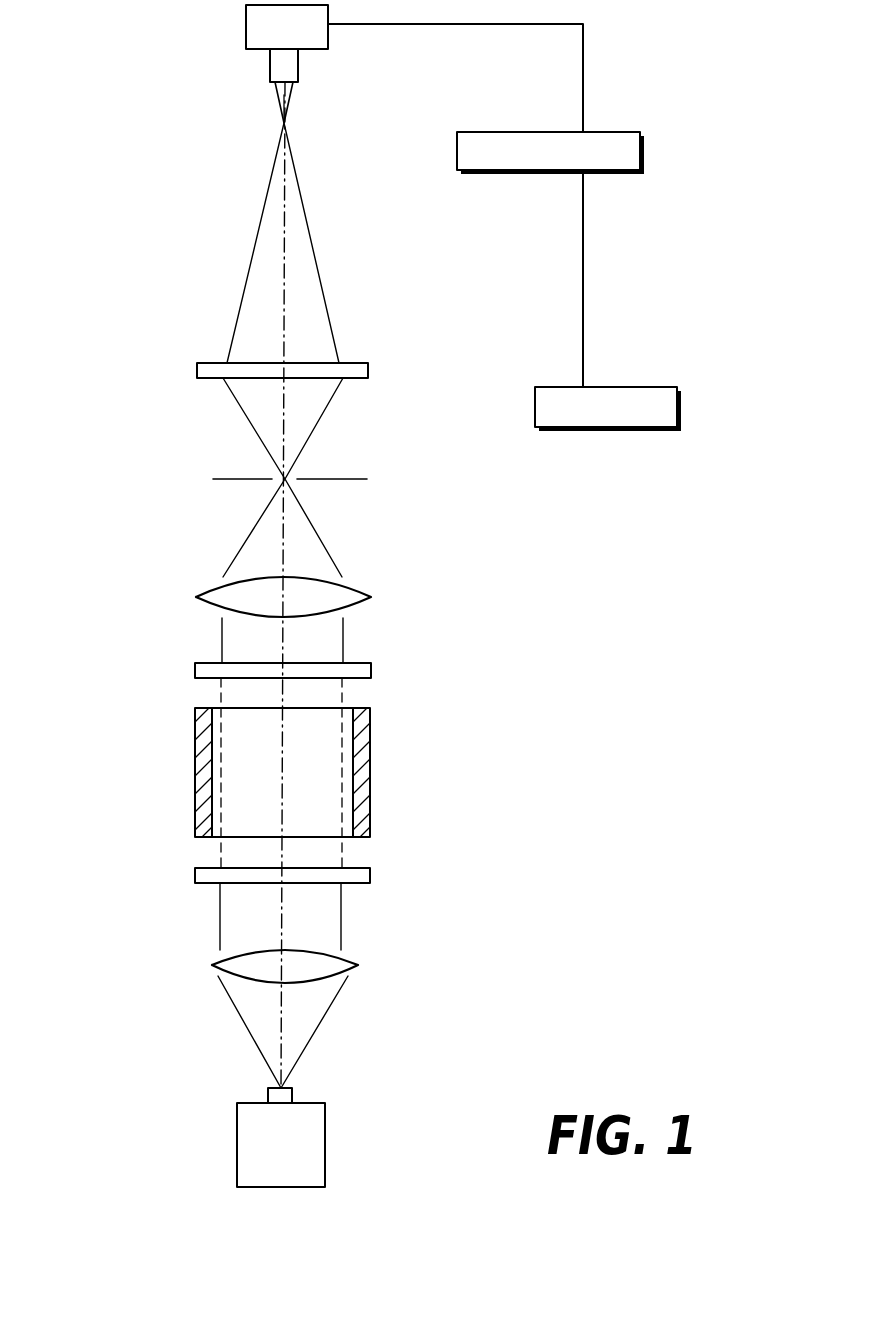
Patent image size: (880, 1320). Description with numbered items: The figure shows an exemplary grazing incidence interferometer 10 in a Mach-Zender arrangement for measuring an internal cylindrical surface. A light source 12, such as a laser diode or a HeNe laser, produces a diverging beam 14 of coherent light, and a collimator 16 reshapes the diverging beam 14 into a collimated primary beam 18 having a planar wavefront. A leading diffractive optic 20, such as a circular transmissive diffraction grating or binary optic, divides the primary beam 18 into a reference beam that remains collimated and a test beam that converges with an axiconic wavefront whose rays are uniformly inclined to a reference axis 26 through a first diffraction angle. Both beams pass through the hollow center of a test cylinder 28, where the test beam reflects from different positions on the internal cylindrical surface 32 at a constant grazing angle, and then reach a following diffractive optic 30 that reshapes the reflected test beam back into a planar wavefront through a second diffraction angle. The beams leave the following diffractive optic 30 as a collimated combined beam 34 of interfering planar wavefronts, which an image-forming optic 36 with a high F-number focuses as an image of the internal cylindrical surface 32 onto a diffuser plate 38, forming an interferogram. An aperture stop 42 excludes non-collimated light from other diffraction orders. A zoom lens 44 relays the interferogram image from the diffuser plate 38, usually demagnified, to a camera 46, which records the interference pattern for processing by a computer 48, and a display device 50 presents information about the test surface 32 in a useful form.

The grazing incidence interferometer 10 is at (128, 240).
The light source 12 is at (314, 1143).
The diverging beam 14 is at (325, 1010).
The collimator 16 is at (212, 965).
The collimated primary beam 18 is at (341, 917).
The leading diffractive optic 20 is at (195, 875).
The reference axis 26 is at (284, 288).
The test cylinder 28 is at (250, 782).
The following diffractive optic 30 is at (195, 670).
The internal cylindrical surface 32 is at (220, 805).
The combined beam 34 is at (344, 630).
The image-forming optic 36 is at (211, 590).
The diffuser plate 38 is at (197, 370).
The aperture stop 42 is at (233, 478).
The zoom lens 44 is at (270, 60).
The camera 46 is at (308, 41).
The computer 48 is at (536, 172).
The display device 50 is at (596, 428).